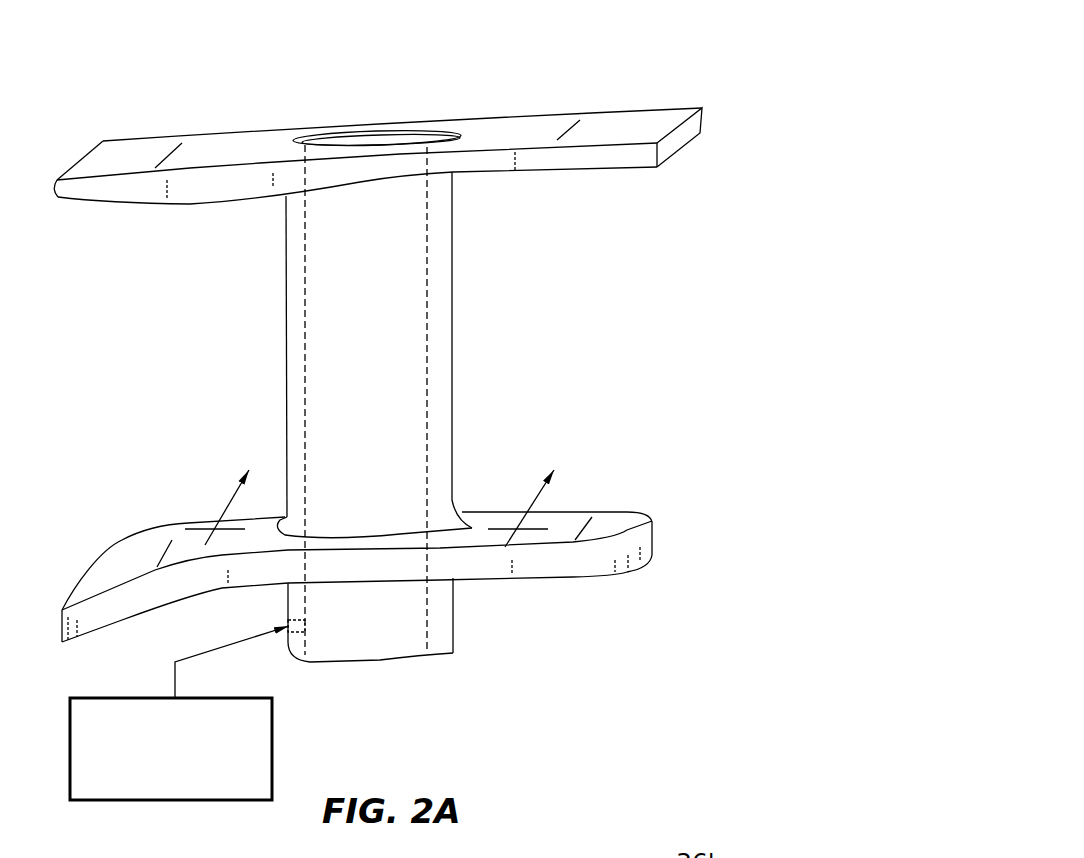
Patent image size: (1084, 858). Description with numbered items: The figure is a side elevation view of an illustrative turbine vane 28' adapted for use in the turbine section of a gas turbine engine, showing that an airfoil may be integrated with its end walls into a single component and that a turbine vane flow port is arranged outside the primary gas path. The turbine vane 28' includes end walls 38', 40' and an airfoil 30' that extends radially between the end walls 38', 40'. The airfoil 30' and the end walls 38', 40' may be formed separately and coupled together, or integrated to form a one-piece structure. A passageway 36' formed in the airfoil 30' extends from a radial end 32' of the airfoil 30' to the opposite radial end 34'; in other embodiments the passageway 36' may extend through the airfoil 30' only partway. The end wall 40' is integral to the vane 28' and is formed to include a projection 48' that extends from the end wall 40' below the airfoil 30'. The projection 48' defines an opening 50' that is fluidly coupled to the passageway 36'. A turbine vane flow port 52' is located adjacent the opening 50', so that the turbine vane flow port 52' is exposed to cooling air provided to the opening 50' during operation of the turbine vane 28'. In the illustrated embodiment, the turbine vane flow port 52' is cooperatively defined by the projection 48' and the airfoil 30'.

The turbine vane 28' is at (436, 407).
The airfoil 30' is at (416, 400).
The radial end 32' is at (429, 197).
The radial end 34' is at (403, 462).
The passageway 36' is at (431, 334).
The end wall 38' is at (436, 126).
The end wall 40' is at (419, 552).
The projection 48' is at (319, 689).
The opening 50' is at (399, 695).
The turbine vane flow port 52' is at (228, 710).